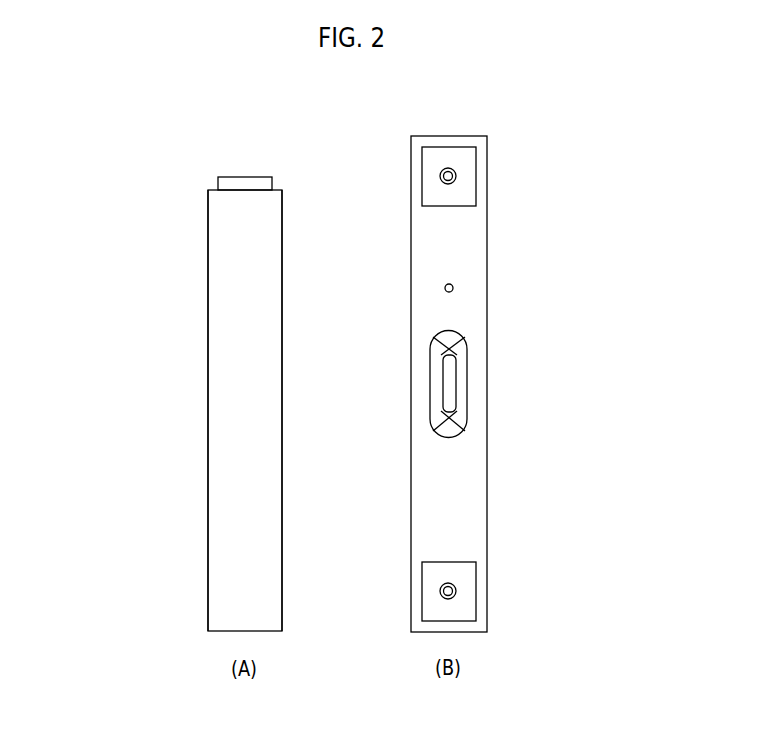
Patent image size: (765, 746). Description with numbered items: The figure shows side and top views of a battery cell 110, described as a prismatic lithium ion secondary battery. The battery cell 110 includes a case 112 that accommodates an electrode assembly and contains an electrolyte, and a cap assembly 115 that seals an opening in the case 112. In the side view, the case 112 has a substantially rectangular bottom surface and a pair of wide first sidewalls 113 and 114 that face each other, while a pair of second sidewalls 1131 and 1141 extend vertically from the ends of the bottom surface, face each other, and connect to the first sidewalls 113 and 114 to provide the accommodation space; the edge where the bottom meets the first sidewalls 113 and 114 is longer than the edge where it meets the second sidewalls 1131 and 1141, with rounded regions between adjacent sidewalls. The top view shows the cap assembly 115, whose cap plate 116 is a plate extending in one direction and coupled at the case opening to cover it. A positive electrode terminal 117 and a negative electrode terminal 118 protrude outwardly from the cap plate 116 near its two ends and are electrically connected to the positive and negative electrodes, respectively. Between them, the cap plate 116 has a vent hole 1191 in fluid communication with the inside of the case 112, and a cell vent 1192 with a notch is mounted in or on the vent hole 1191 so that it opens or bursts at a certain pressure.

The battery cell 110 is at (347, 361).
The case 112 is at (218, 380).
The first sidewall 113 is at (207, 487).
The first sidewall 114 is at (283, 438).
The cap assembly 115 is at (243, 168).
The cap plate 116 is at (474, 489).
The positive electrode terminal 117 is at (466, 176).
The negative electrode terminal 118 is at (466, 590).
The second sidewall 1131 is at (448, 135).
The second sidewall 1141 is at (479, 637).
The vent hole 1191 is at (467, 368).
The cell vent 1192 is at (458, 397).